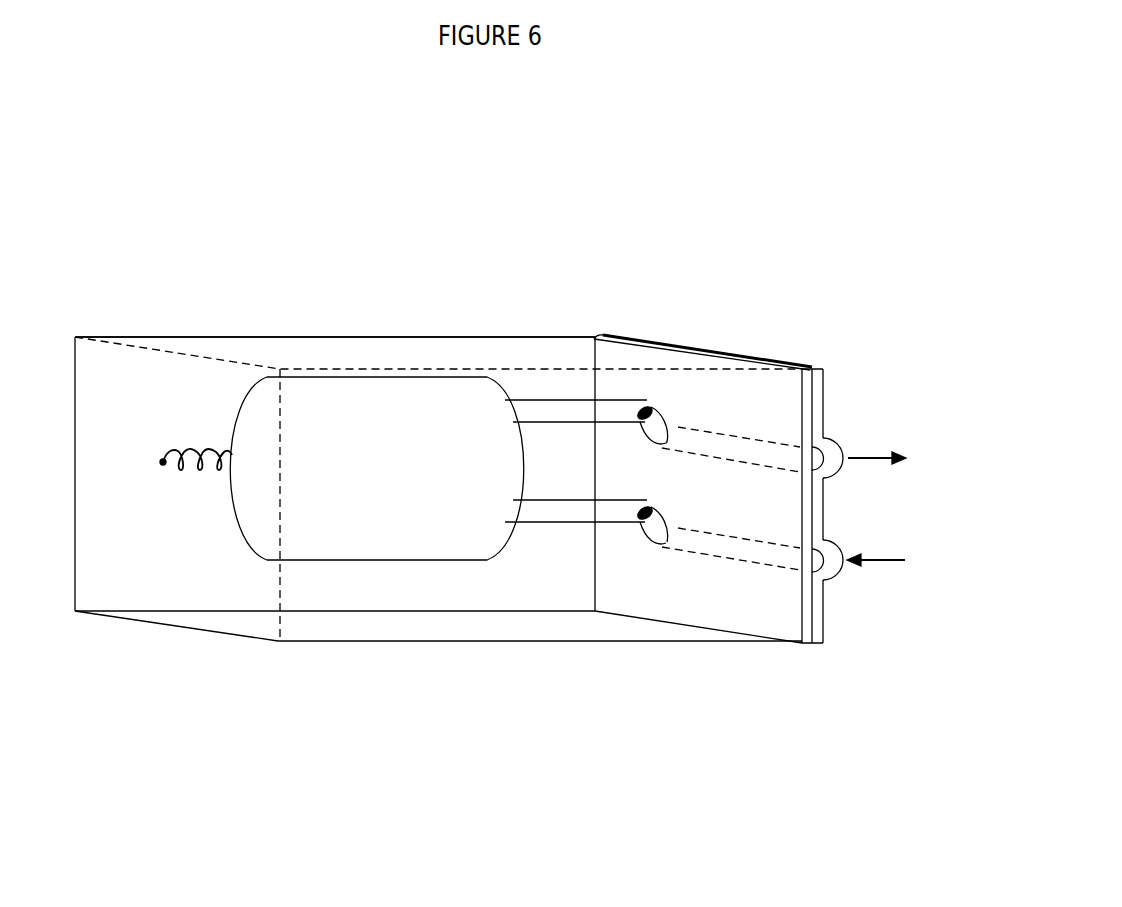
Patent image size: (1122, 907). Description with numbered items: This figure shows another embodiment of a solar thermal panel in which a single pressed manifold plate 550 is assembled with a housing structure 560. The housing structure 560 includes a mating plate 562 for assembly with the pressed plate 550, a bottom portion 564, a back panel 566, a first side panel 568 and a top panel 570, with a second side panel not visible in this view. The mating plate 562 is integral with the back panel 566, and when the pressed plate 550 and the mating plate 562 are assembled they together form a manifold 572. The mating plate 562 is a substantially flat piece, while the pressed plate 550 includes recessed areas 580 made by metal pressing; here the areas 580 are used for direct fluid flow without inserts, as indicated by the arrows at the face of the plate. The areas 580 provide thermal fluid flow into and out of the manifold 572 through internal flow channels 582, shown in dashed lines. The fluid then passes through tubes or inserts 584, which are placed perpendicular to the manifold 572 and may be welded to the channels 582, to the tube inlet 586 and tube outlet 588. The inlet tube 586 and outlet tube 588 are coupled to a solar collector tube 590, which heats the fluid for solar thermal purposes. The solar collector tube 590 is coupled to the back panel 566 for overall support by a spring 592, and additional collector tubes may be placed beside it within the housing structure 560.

The pressed manifold plate 550 is at (820, 398).
The housing structure 560 is at (583, 620).
The mating plate 562 is at (807, 367).
The bottom portion 564 is at (320, 630).
The back panel 566 is at (112, 425).
The first side panel 568 is at (412, 578).
The top panel 570 is at (533, 347).
The manifold 572 is at (811, 642).
The recessed areas 580 is at (820, 560).
The internal flow channels 582 is at (728, 537).
The inserts 584 is at (658, 523).
The tube inlet 586 is at (553, 510).
The tube outlet 588 is at (533, 408).
The solar collector tube 590 is at (310, 403).
The spring 592 is at (188, 450).